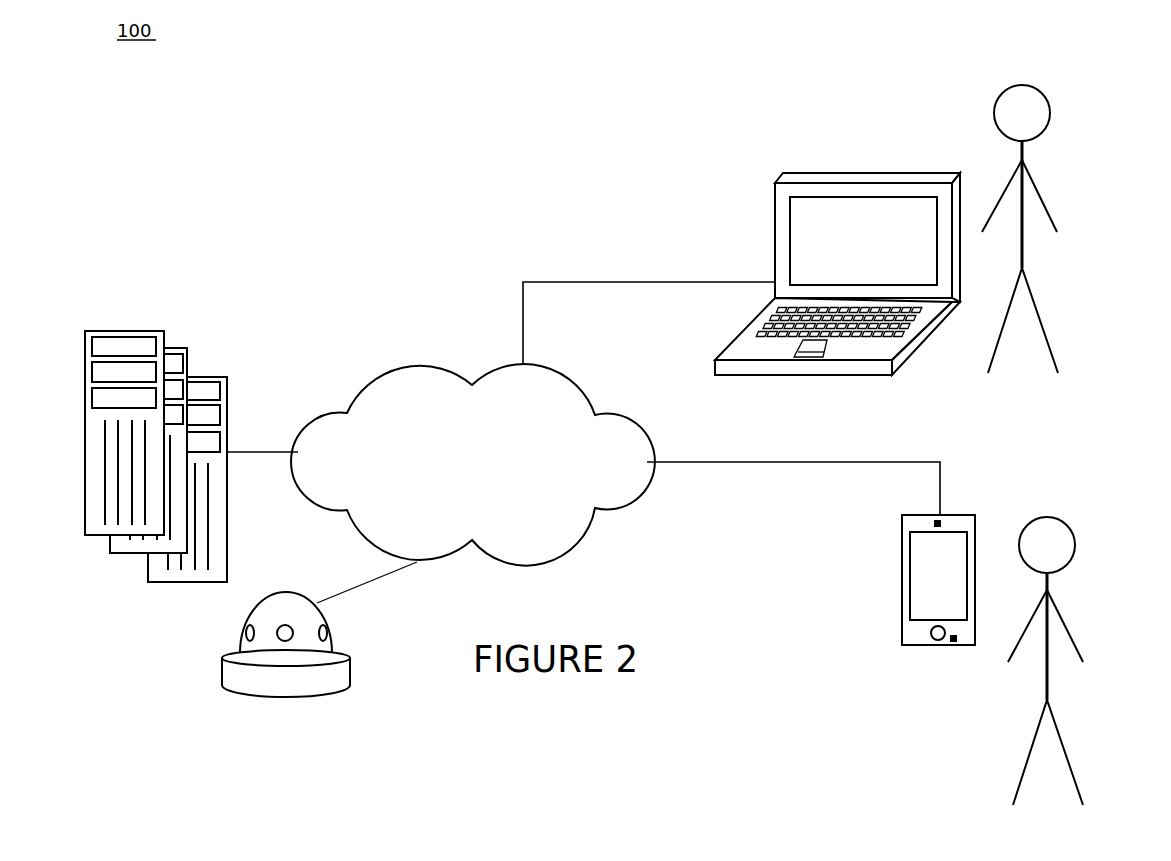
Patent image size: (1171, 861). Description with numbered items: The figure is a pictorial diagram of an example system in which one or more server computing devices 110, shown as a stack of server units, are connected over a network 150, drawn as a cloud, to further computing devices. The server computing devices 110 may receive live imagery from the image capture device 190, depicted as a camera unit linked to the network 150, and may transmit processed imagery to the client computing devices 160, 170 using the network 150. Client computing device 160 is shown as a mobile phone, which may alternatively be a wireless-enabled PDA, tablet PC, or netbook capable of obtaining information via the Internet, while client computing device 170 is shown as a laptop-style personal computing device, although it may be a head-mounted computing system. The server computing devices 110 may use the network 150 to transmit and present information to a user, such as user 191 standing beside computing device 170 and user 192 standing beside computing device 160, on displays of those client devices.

The server computing devices 110 is at (114, 331).
The network 150 is at (420, 360).
The client computing device 160 is at (902, 538).
The client computing device 170 is at (772, 216).
The image capture device 190 is at (222, 678).
The user 191 is at (1048, 173).
The user 192 is at (1072, 588).